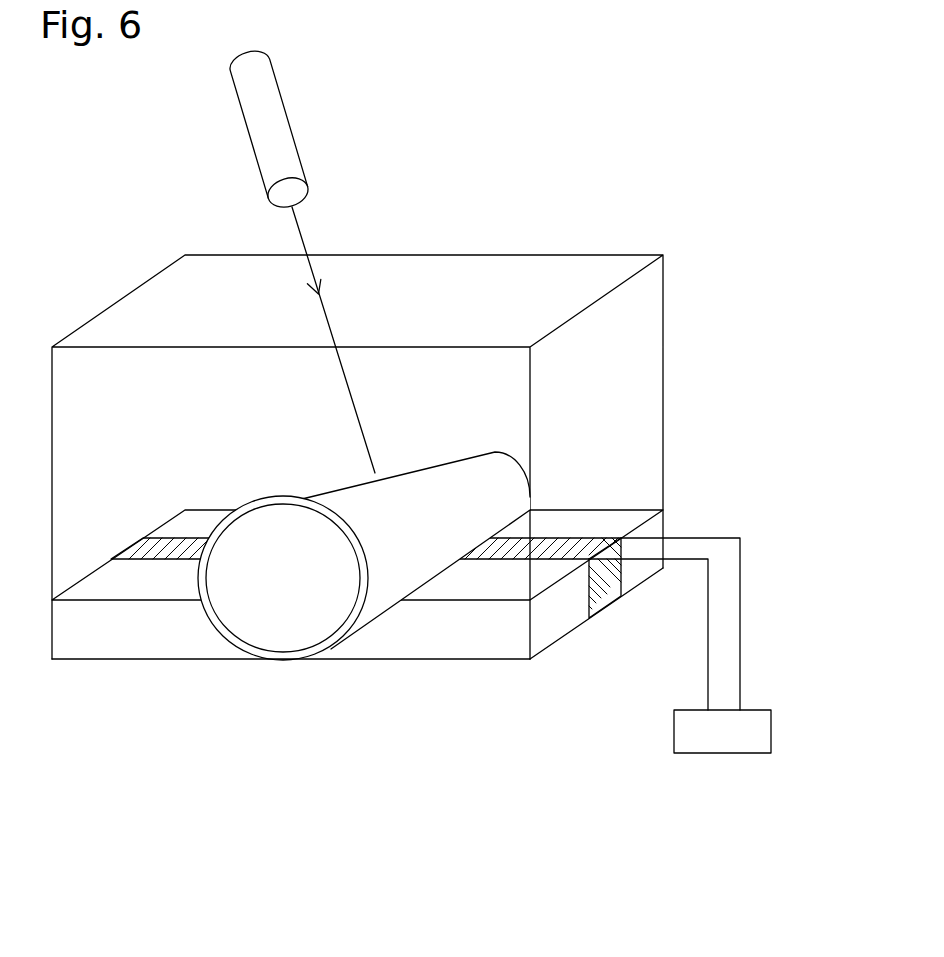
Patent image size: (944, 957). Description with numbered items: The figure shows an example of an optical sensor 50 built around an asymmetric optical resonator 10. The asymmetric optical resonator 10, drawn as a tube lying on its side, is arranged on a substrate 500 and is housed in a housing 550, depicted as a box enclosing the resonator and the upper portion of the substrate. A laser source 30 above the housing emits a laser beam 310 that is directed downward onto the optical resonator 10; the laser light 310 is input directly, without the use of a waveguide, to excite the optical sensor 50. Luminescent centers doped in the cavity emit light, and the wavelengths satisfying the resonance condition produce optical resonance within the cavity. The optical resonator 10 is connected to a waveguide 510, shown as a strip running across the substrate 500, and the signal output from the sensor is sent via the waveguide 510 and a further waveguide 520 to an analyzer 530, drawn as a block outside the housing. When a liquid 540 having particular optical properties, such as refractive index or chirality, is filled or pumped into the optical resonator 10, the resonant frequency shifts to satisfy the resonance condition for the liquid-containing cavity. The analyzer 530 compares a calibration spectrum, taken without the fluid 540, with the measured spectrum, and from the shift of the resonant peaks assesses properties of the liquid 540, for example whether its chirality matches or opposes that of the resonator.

The asymmetric optical resonator 10 is at (262, 612).
The laser source 30 is at (284, 112).
The laser beam 310 is at (303, 243).
The optical sensor 50 is at (397, 668).
The substrate 500 is at (82, 637).
The waveguide 510 is at (607, 608).
The further waveguide 520 is at (692, 538).
The analyzer 530 is at (723, 753).
The liquid 540 is at (303, 612).
The housing 550 is at (477, 263).